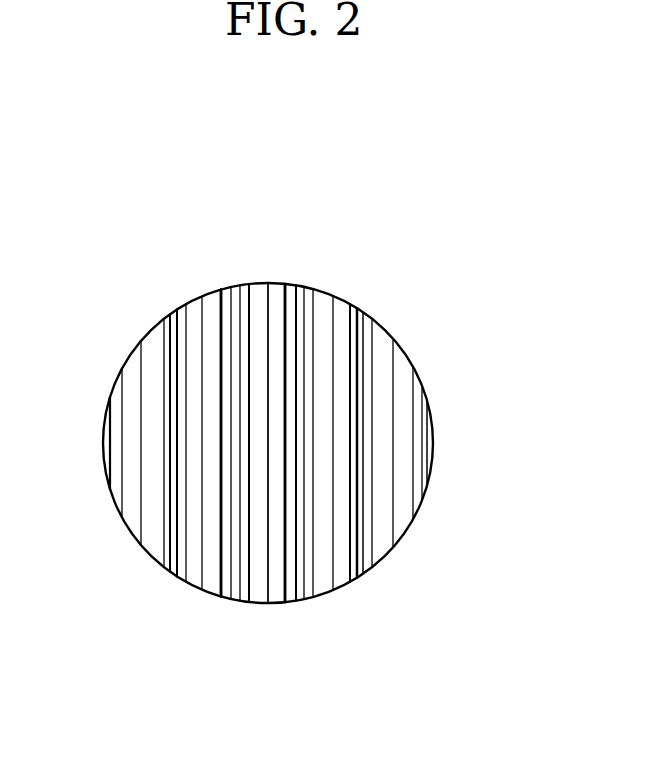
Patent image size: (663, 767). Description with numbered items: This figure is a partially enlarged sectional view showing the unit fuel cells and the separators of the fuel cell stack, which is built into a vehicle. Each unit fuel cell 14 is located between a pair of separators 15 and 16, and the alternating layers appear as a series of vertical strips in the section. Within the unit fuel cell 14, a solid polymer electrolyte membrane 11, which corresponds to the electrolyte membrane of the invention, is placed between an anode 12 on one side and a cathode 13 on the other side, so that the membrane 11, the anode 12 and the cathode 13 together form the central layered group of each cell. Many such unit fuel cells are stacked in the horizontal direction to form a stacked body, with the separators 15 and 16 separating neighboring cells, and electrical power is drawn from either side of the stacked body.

The solid polymer electrolyte membrane 11 is at (302, 290).
The anode 12 is at (292, 288).
The cathode 13 is at (310, 288).
The unit fuel cell 14 is at (385, 185).
The separator 15 is at (276, 320).
The separator 16 is at (320, 348).